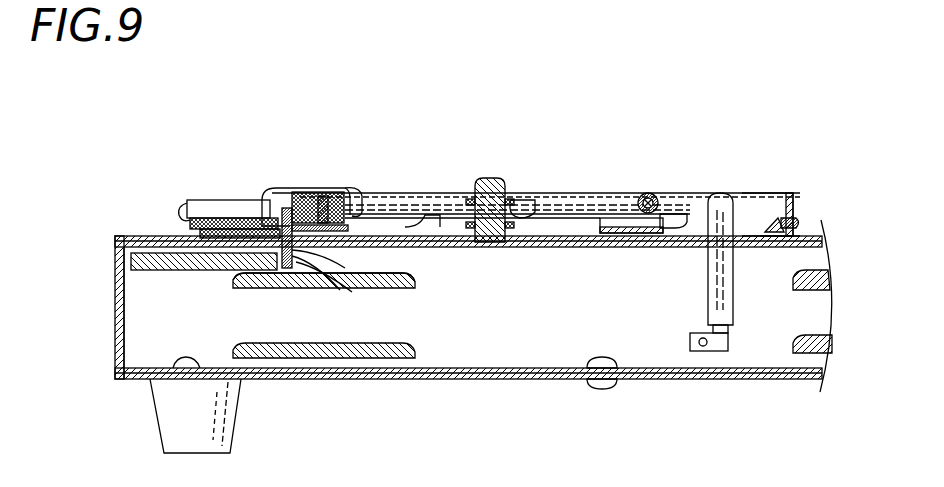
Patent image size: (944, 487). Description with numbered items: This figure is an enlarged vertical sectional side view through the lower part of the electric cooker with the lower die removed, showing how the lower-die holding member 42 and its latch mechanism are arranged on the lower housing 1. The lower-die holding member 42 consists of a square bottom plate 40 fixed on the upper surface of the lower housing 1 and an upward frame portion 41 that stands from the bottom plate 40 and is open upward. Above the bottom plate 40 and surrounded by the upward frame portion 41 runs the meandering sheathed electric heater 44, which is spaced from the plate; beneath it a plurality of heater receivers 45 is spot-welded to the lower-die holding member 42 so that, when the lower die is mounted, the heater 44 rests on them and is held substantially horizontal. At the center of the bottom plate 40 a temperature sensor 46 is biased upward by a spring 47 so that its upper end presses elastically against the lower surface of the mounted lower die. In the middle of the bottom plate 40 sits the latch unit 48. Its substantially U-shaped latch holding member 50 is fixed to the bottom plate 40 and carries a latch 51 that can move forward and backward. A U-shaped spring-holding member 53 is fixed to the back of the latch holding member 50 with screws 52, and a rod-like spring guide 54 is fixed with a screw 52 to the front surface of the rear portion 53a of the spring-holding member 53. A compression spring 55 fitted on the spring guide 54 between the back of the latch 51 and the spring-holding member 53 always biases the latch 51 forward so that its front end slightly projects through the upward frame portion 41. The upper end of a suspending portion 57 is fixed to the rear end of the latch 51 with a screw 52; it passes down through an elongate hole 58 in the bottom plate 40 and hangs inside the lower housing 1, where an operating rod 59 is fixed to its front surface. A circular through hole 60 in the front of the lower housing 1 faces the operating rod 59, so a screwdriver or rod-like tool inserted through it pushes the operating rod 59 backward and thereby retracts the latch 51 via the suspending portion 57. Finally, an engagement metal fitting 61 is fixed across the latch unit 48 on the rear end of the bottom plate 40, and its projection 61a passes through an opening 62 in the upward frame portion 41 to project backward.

The lower housing 1 is at (462, 382).
The bottom plate 40 is at (578, 226).
The upward frame portion 41 is at (743, 193).
The lower-die holding member 42 is at (772, 192).
The electric heater 44 is at (614, 193).
The heater receiver 45 is at (410, 225).
The temperature sensor 46 is at (488, 178).
The spring 47 is at (531, 197).
The latch unit 48 is at (225, 192).
The latch holding member 50 is at (196, 202).
The latch 51 is at (180, 210).
The screw 52 is at (290, 192).
The spring-holding member 53 is at (348, 154).
The rear portion 53a is at (358, 190).
The spring guide 54 is at (322, 192).
The compression spring 55 is at (305, 190).
The suspending portion 57 is at (302, 258).
The elongate hole 58 is at (300, 252).
The operating rod 59 is at (140, 270).
The through hole 60 is at (128, 260).
The engagement metal fitting 61 is at (830, 300).
The projection 61a is at (800, 218).
The opening 62 is at (797, 218).